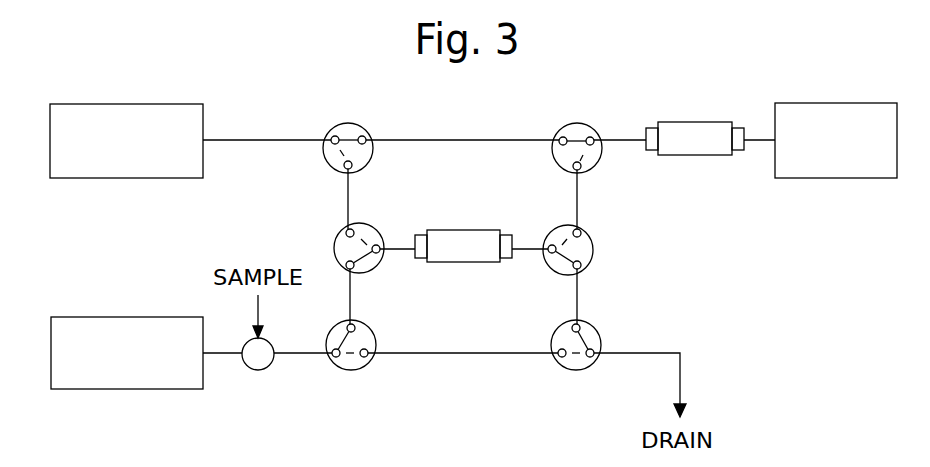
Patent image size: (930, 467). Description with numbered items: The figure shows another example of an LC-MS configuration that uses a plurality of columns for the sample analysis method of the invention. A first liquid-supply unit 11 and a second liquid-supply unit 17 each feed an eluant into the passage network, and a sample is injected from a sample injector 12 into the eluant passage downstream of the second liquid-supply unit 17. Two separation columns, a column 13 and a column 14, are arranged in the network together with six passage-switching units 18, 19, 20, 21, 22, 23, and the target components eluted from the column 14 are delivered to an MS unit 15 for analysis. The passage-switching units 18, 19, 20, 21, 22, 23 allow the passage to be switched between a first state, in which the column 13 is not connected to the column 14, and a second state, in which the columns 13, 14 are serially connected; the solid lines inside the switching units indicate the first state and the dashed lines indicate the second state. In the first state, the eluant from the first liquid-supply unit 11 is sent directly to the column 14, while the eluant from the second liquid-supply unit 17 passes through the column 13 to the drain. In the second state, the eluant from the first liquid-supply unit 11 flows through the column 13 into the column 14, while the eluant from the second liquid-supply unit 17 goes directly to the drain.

The first liquid-supply unit 11 is at (143, 178).
The sample injector 12 is at (260, 370).
The column 13 is at (470, 265).
The column 14 is at (690, 155).
The MS unit 15 is at (838, 178).
The second liquid-supply unit 17 is at (143, 389).
The passage-switching unit 18 is at (363, 125).
The passage-switching unit 19 is at (580, 124).
The passage-switching unit 20 is at (337, 235).
The passage-switching unit 21 is at (593, 238).
The passage-switching unit 22 is at (340, 368).
The passage-switching unit 23 is at (567, 368).